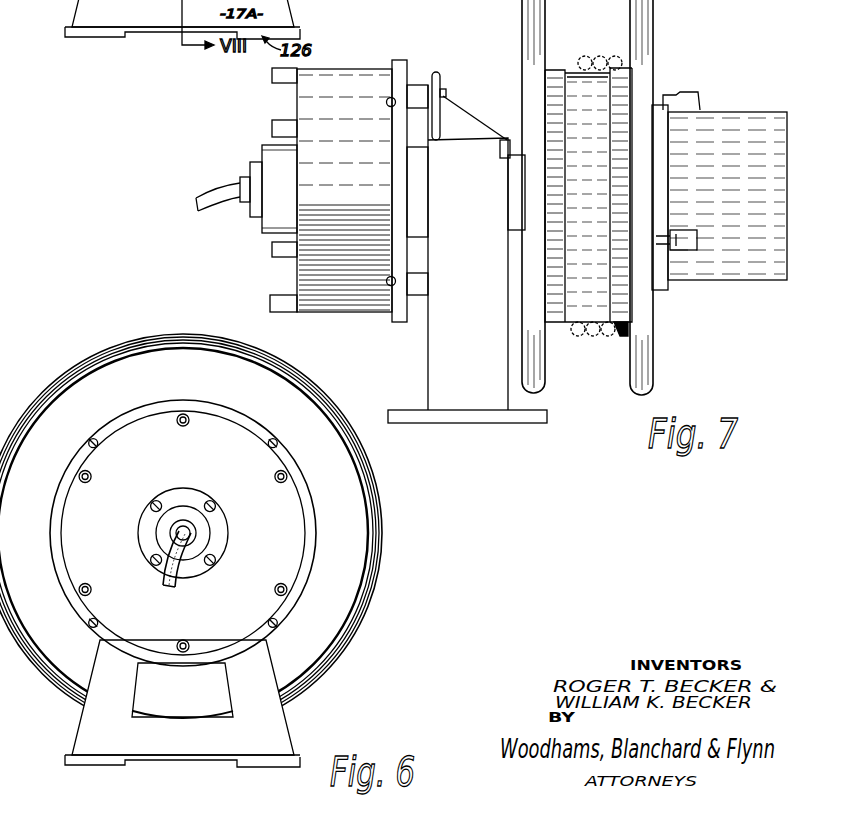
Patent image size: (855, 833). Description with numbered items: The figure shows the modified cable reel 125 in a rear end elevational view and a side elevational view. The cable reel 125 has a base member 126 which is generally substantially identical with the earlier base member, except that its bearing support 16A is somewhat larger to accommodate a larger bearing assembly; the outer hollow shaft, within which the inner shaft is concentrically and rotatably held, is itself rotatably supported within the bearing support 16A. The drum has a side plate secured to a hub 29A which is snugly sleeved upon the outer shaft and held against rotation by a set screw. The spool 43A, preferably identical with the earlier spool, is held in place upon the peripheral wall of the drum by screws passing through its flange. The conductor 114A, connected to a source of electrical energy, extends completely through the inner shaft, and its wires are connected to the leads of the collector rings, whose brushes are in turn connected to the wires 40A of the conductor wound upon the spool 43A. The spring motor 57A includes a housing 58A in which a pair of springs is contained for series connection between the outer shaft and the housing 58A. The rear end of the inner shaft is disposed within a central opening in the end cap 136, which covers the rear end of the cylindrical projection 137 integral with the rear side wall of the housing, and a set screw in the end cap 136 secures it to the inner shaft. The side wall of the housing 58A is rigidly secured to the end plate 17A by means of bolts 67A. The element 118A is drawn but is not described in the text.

In FIG. 7, the bearing support 16A is at (494, 122).
In FIG. 6, the end plate 17A is at (183, 697).
In FIG. 7, the hub 29A is at (512, 231).
In FIG. 7, the wires 40A is at (658, 3).
In FIG. 6, the spool 43A is at (82, 353).
In FIG. 7, the spring motor 57A is at (335, 316).
In FIG. 7, the housing 58A is at (362, 70).
In FIG. 7, the bolts 67A is at (442, 85).
In FIG. 7, the conductor 114A is at (222, 184).
In FIG. 6, the conductor 114A is at (177, 586).
In FIG. 7, the drive cylinder 118A is at (710, 104).
In FIG. 7, the cable reel 125 is at (421, 318).
In FIG. 6, the cable reel 125 is at (362, 648).
In FIG. 7, the base member 126 is at (497, 426).
In FIG. 6, the base member 126 is at (78, 768).
In FIG. 7, the end cap 136 is at (256, 218).
In FIG. 7, the cylindrical projection 137 is at (272, 245).